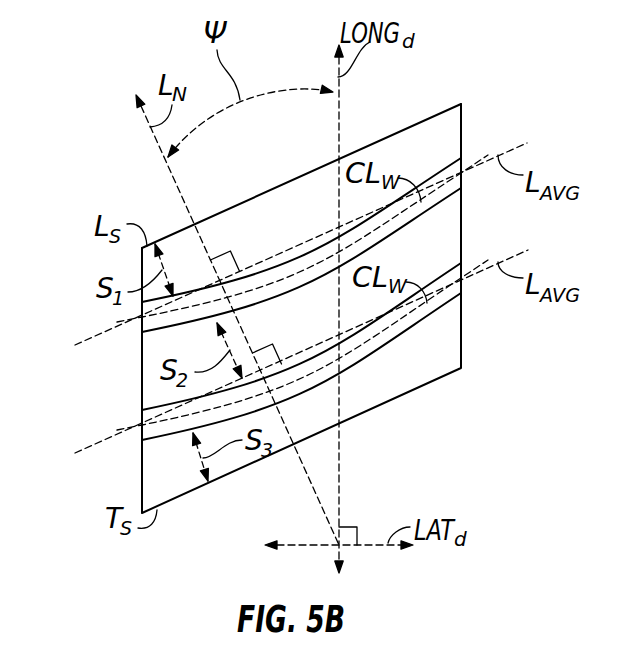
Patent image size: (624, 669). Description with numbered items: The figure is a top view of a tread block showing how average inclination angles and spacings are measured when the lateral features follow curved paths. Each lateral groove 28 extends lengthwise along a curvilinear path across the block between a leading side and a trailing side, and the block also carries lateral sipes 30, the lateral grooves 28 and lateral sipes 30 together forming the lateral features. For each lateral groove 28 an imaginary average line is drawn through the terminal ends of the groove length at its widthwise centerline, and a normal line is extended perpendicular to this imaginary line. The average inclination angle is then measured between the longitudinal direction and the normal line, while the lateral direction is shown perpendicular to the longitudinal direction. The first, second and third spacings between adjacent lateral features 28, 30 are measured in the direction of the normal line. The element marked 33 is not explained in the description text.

The lateral groove 28 is at (167, 237).
The lateral sipe 30 is at (166, 329).
The top surface 33 is at (432, 118).